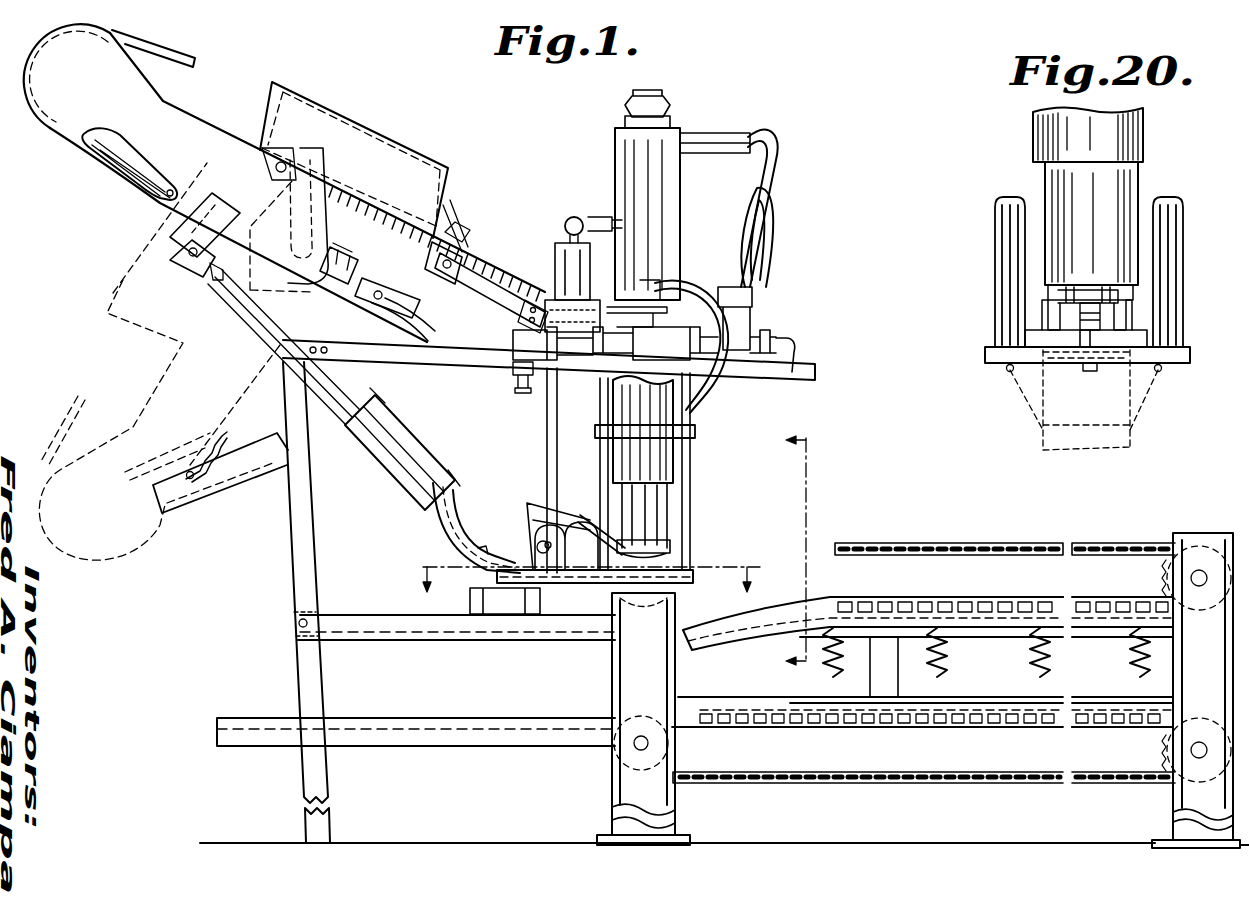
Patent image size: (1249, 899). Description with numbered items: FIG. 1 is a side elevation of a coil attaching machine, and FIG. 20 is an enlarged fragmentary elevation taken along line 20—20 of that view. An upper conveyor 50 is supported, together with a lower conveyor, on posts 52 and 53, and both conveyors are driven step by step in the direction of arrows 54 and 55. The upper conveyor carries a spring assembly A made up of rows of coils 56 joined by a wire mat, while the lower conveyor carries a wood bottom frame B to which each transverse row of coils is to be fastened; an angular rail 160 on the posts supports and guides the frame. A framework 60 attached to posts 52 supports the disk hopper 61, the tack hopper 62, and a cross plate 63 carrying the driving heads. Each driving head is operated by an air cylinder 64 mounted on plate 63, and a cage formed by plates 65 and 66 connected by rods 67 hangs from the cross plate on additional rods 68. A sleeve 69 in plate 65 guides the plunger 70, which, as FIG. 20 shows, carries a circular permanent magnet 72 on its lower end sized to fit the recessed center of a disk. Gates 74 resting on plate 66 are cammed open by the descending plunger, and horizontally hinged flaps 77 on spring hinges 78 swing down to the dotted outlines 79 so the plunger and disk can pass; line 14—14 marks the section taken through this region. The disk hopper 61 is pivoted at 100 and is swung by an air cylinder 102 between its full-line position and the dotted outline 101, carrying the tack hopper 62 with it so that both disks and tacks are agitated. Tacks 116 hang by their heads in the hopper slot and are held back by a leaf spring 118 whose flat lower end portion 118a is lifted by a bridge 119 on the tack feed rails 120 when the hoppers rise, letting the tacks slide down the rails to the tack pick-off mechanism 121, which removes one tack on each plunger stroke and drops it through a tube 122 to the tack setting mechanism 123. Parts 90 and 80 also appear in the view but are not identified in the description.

In FIG. 1, the disk feed hopper 61 is at (77, 107).
In FIG. 1, the tack hopper 62 is at (375, 137).
In FIG. 1, the leaf spring 118 is at (446, 243).
In FIG. 1, the flat lower end portion 118a is at (456, 238).
In FIG. 1, the bridge 119 is at (452, 264).
In FIG. 1, the tack feed rails 120 is at (492, 282).
In FIG. 1, the pivot 100 is at (312, 305).
In FIG. 1, the air cylinder 102 is at (400, 417).
In FIG. 1, the tube 90 is at (457, 507).
In FIG. 1, the framework 60 is at (317, 534).
In FIG. 1, the dotted outline 101 is at (150, 523).
In FIG. 1, the cross plate 63 is at (750, 373).
In FIG. 1, the posts 52 is at (621, 670).
In FIG. 1, the block 80 is at (555, 582).
In FIG. 1, the plate 66 is at (690, 582).
In FIG. 20, the plate 66 is at (1170, 353).
In FIG. 1, the rods 67 is at (690, 467).
In FIG. 20, the rods 67 is at (997, 266).
In FIG. 1, the plate 65 is at (690, 432).
In FIG. 1, the sleeve 69 is at (665, 457).
In FIG. 20, the sleeve 69 is at (1137, 133).
In FIG. 1, the plunger 70 is at (657, 517).
In FIG. 20, the plunger 70 is at (1117, 200).
In FIG. 1, the tube 122 is at (547, 432).
In FIG. 1, the tack setting mechanism 123 is at (570, 525).
In FIG. 1, the air cylinder 64 is at (665, 222).
In FIG. 1, the tacks 116 is at (558, 250).
In FIG. 1, the tack pick-off mechanism 121 is at (566, 236).
In FIG. 1, the additional rods 68 is at (693, 407).
In FIG. 1, the section line 14— 14 is at (581, 567).
In FIG. 1, the section line 20— 20 is at (772, 553).
In FIG. 1, the arrow 54 is at (850, 584).
In FIG. 1, the upper conveyor 50 is at (1040, 545).
In FIG. 1, the spring assembly A is at (1023, 605).
In FIG. 1, the coils 56 is at (840, 650).
In FIG. 1, the angular rail 160 is at (1008, 707).
In FIG. 1, the wood bottom frame B is at (1100, 710).
In FIG. 1, the arrow 55 is at (823, 728).
In FIG. 1, the posts 53 is at (1185, 680).
In FIG. 20, the circular permanent magnet 72 is at (1100, 285).
In FIG. 20, the spring hinges 78 is at (1008, 368).
In FIG. 20, the horizontally hinged flaps 77 is at (1043, 365).
In FIG. 20, the gates 74 is at (1063, 365).
In FIG. 20, the dotted outlines 79 is at (1086, 400).